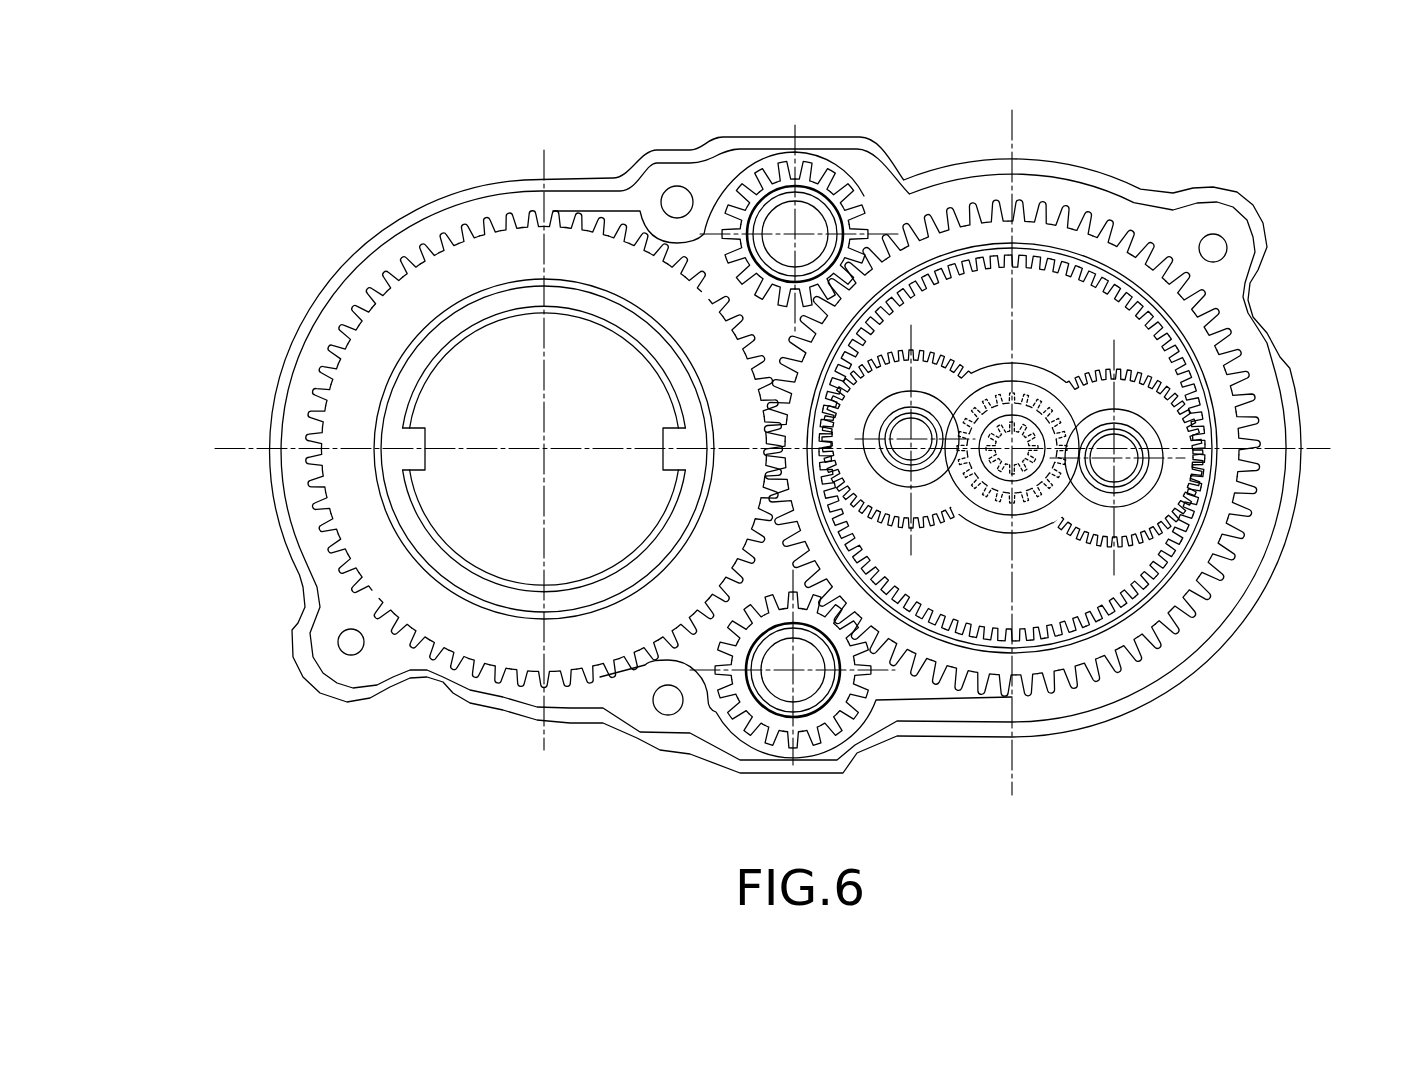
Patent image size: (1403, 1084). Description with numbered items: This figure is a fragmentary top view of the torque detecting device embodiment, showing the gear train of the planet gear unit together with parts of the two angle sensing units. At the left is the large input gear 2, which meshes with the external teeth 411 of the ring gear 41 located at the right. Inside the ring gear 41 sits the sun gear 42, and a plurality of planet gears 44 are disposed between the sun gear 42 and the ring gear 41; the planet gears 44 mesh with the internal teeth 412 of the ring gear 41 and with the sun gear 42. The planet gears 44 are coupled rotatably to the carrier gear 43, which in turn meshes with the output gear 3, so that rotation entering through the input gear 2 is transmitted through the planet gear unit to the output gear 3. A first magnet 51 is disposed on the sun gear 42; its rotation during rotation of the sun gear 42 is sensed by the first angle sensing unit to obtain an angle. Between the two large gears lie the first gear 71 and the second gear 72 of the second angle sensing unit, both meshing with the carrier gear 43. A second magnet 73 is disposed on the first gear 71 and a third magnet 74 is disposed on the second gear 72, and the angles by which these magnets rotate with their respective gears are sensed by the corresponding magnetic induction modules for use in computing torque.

The input gear 2 is at (442, 658).
The output gear 3 is at (595, 680).
The ring gear 41 is at (1054, 662).
The external teeth 411 is at (1045, 203).
The internal teeth 412 is at (998, 247).
The sun gear 42 is at (1022, 398).
The carrier gear 43 is at (1000, 694).
The planet gears 44 is at (946, 352).
The first magnet 51 is at (1040, 435).
The first gear 71 is at (858, 702).
The second gear 72 is at (846, 193).
The second magnet 73 is at (772, 682).
The third magnet 74 is at (786, 217).